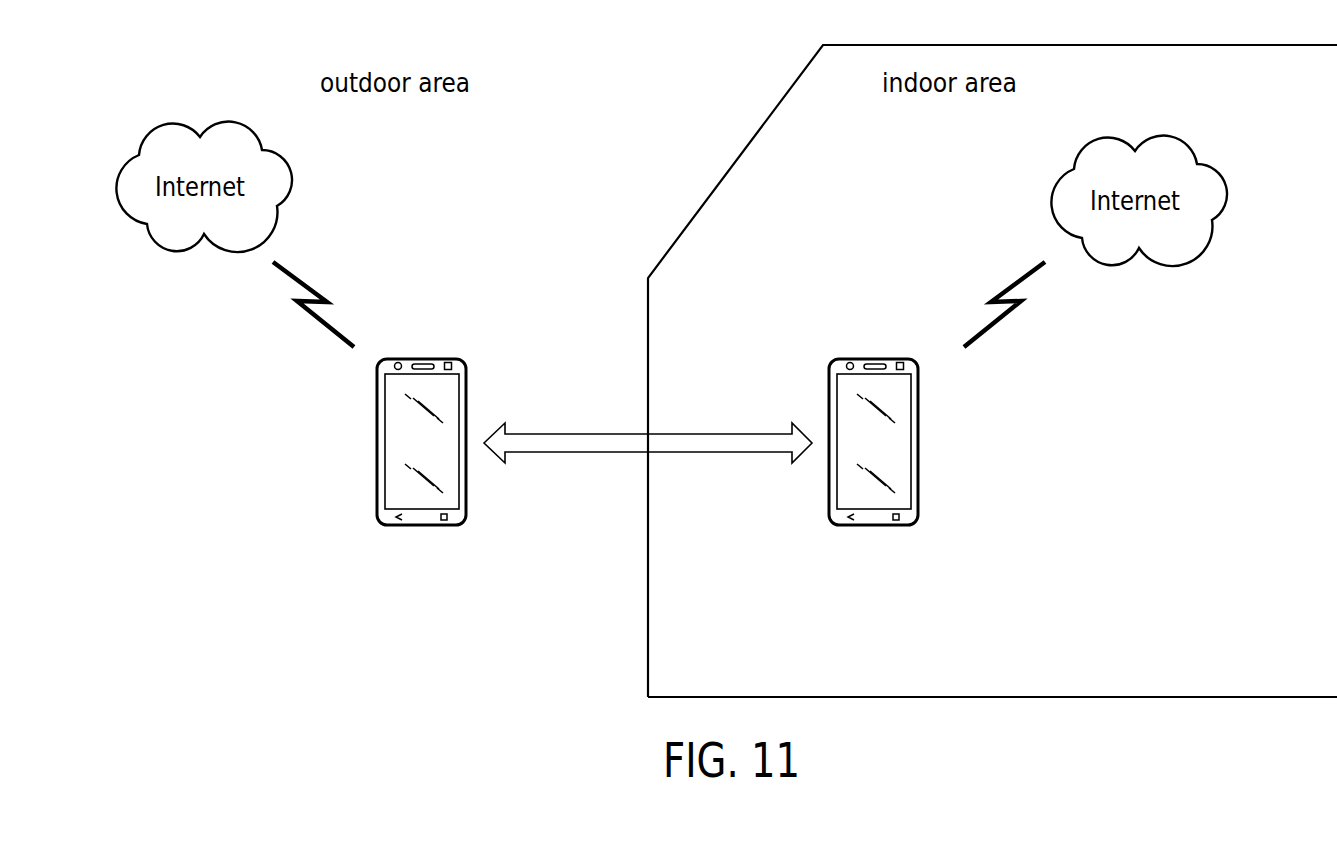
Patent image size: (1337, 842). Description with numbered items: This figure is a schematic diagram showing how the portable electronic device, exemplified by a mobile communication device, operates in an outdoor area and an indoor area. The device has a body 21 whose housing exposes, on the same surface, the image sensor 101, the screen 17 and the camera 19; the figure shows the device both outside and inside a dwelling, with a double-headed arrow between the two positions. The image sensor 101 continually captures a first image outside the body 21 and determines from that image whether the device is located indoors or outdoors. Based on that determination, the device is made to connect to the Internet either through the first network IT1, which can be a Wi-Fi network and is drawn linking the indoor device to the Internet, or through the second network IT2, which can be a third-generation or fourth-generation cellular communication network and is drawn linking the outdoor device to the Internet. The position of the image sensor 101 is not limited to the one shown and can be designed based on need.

The screen 17 is at (902, 459).
The camera 19 is at (847, 360).
The body 21 is at (872, 358).
The image sensor 101 is at (900, 360).
The first network IT1 is at (1003, 304).
The second network IT2 is at (317, 304).